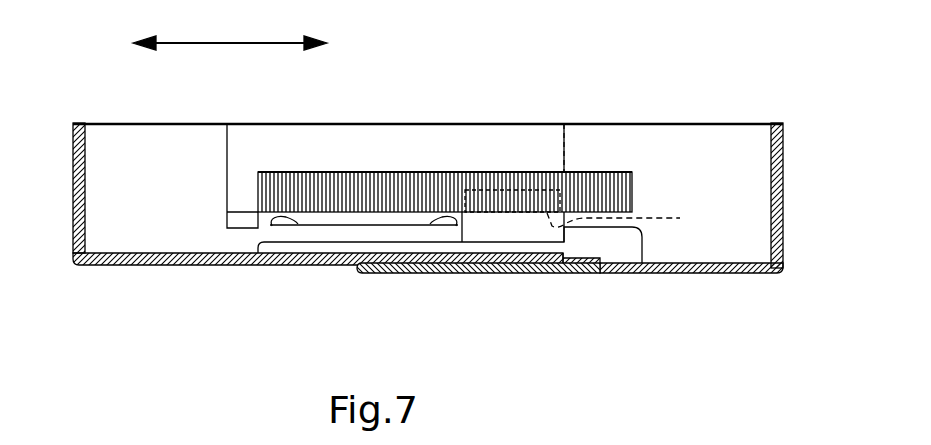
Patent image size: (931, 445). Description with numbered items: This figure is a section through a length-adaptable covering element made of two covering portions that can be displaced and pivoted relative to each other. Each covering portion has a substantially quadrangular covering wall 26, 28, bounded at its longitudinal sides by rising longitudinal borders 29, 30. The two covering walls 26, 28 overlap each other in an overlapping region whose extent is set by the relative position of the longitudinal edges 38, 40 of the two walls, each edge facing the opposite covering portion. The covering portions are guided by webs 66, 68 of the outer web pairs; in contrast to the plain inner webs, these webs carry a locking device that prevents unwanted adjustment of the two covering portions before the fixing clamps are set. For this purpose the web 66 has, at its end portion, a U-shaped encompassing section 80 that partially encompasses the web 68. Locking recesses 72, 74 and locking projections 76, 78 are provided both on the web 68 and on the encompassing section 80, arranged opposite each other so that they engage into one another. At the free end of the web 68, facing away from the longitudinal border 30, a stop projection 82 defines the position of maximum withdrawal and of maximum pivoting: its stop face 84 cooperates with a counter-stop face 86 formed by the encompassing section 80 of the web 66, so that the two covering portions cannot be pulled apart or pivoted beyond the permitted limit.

The covering wall 26 is at (264, 260).
The covering wall 28 is at (700, 275).
The longitudinal border 29 is at (73, 167).
The longitudinal border 30 is at (783, 172).
The longitudinal edge 38 is at (598, 265).
The longitudinal edge 40 is at (352, 268).
The web 66 is at (128, 162).
The web 68 is at (688, 163).
The locking recess 72 is at (373, 172).
The locking recess 74 is at (632, 222).
The locking projection 76 is at (325, 172).
The locking projection 78 is at (482, 213).
The encompassing section 80 is at (510, 222).
The stop projection 82 is at (240, 220).
The stop face 84 is at (300, 228).
The counter-stop face 86 is at (444, 228).